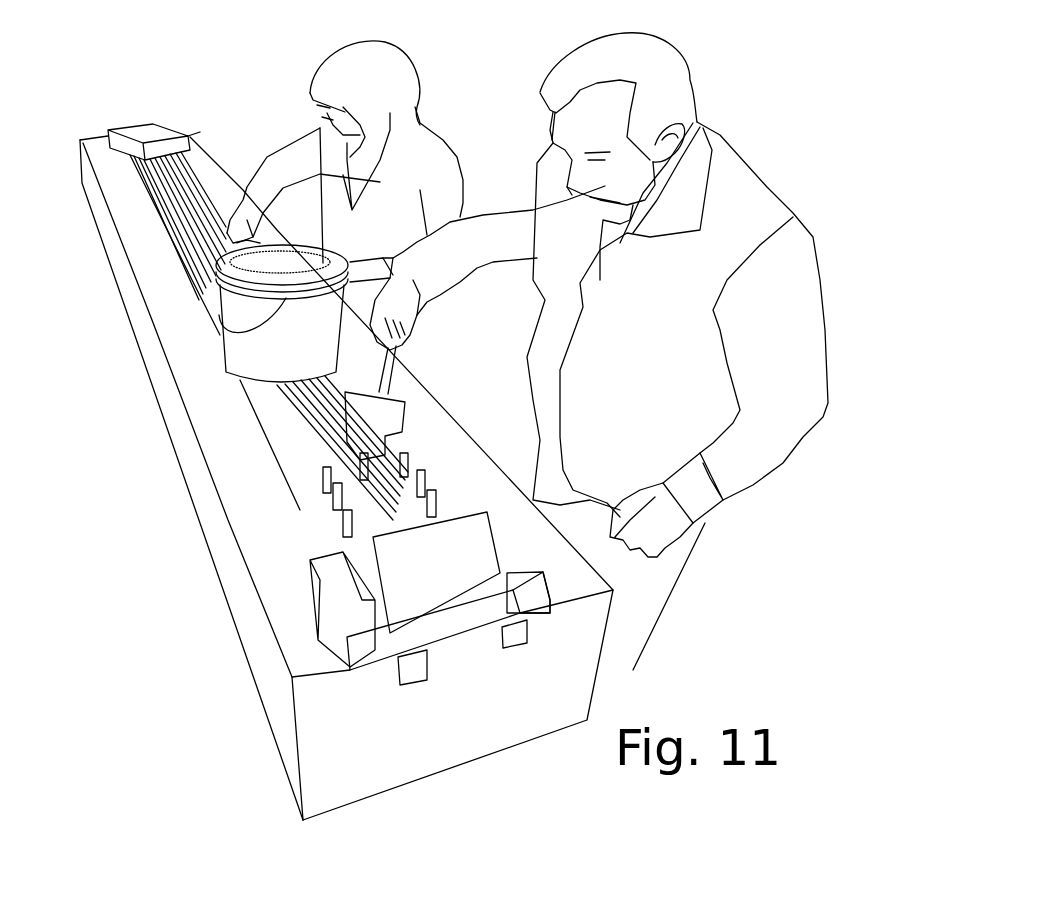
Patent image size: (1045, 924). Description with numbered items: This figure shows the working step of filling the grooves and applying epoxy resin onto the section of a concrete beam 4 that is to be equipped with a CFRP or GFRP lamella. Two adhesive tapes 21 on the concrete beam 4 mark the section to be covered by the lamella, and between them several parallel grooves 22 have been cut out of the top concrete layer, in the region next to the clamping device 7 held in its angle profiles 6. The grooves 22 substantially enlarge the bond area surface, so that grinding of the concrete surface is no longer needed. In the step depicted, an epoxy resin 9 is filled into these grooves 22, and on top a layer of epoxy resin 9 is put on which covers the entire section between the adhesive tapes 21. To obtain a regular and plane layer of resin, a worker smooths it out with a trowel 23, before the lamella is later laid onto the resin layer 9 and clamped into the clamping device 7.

The concrete beam 4 is at (202, 423).
The angle profiles 6 is at (313, 582).
The clamping device 7 is at (433, 570).
The epoxy resin 9 is at (360, 487).
The adhesive tapes 21 is at (343, 393).
The grooves 22 is at (162, 222).
The trowel 23 is at (367, 400).